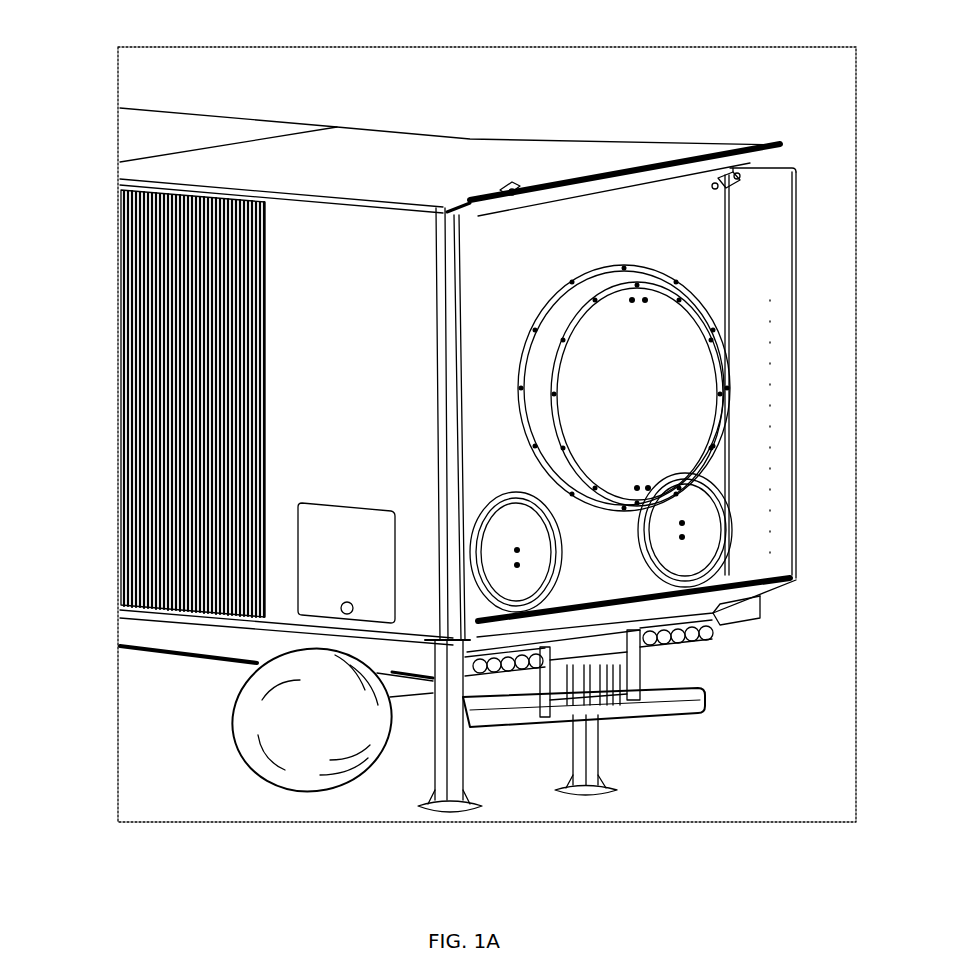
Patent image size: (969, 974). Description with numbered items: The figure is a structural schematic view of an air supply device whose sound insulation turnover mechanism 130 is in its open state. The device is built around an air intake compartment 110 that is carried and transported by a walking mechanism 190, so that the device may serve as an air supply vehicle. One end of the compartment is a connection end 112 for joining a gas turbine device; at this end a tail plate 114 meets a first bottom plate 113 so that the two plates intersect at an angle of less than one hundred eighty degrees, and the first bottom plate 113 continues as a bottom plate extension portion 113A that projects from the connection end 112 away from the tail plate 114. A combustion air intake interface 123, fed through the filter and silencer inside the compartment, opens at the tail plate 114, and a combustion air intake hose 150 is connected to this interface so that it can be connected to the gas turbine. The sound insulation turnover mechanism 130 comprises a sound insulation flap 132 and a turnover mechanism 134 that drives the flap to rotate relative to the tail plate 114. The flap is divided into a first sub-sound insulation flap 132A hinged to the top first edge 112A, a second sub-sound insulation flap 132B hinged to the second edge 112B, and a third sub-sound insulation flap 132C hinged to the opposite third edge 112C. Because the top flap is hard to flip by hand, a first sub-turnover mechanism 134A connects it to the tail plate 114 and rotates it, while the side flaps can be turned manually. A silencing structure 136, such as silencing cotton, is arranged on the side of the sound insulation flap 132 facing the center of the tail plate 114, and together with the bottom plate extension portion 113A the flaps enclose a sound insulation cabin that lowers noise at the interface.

The air intake compartment 110 is at (450, 354).
The connection end 112 is at (613, 332).
The first edge 112A is at (508, 185).
The second edge 112B is at (445, 412).
The third edge 112C is at (690, 615).
The first bottom plate 113 is at (545, 736).
The bottom plate extension portion 113A is at (803, 724).
The tail plate 114 is at (684, 663).
The combustion air intake interface 123 is at (597, 262).
The sound insulation turnover mechanism 130 is at (798, 301).
The sound insulation flap 132 is at (778, 382).
The first sub-sound insulation flap 132A is at (777, 373).
The second sub-sound insulation flap 132B is at (563, 672).
The third sub-sound insulation flap 132C is at (833, 446).
The turnover mechanism 134 is at (828, 295).
The first sub-turnover mechanism 134A is at (726, 180).
The silencing structure 136 is at (346, 326).
The combustion air intake hose 150 is at (520, 385).
The walking mechanism 190 is at (295, 743).